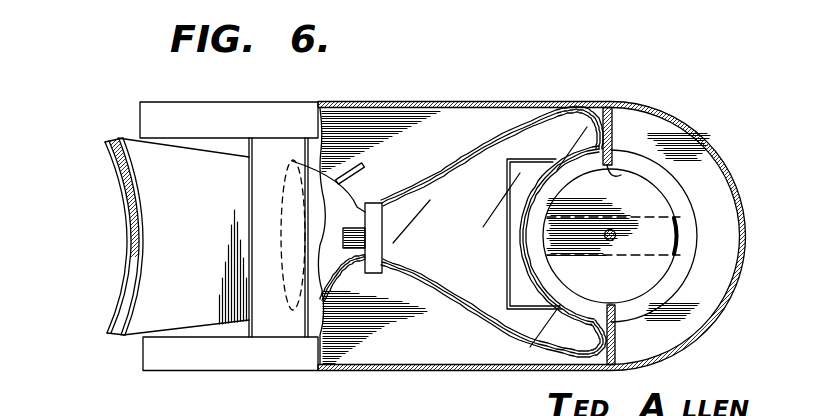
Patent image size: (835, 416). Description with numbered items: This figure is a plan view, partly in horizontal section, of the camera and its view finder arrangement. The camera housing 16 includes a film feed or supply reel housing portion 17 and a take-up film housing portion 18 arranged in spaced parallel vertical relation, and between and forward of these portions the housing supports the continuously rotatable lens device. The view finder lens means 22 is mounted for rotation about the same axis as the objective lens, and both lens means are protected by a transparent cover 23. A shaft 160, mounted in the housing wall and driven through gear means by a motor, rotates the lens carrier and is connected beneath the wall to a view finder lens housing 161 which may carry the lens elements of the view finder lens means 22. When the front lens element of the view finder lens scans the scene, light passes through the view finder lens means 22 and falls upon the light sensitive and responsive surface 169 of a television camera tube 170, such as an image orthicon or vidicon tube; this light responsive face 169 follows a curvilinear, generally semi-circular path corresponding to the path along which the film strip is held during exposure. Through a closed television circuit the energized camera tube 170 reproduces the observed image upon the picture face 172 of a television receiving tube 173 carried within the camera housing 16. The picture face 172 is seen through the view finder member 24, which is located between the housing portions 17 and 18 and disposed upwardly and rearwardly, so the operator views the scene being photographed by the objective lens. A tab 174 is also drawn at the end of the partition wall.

The camera housing 16 is at (430, 101).
The film feed or supply reel housing portion 17 is at (163, 108).
The take-up film housing portion 18 is at (193, 364).
The view finder lens means 22 is at (689, 228).
The transparent cover 23 is at (685, 229).
The view finder member 24 is at (152, 197).
The shaft 160 is at (613, 241).
The view finder lens housing 161 is at (661, 202).
The light sensitive and responsive surface 169 is at (525, 250).
The television camera tube 170 is at (503, 142).
The picture face 172 is at (297, 180).
The television receiving tube 173 is at (328, 182).
The tab 174 is at (613, 176).